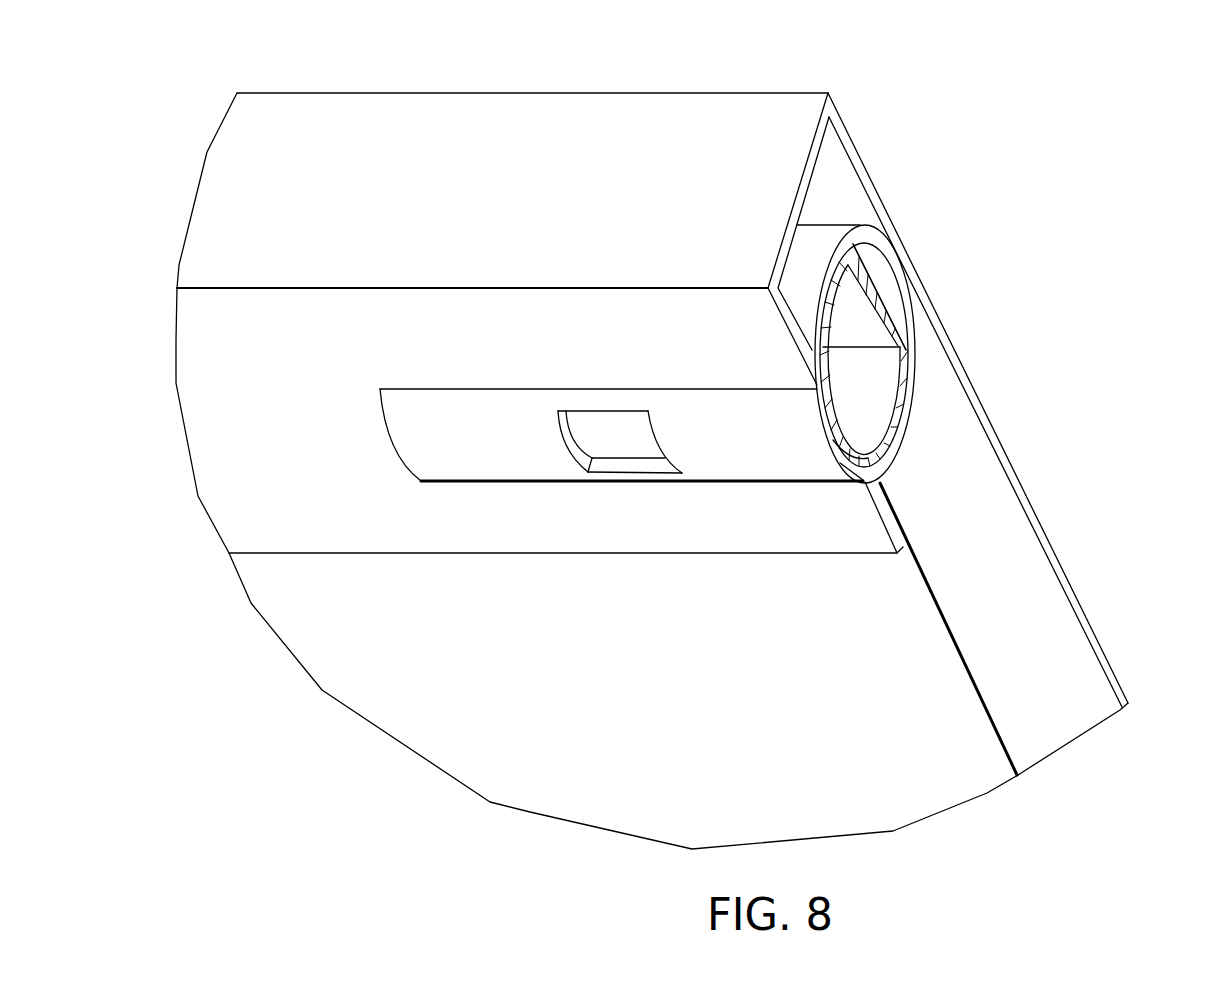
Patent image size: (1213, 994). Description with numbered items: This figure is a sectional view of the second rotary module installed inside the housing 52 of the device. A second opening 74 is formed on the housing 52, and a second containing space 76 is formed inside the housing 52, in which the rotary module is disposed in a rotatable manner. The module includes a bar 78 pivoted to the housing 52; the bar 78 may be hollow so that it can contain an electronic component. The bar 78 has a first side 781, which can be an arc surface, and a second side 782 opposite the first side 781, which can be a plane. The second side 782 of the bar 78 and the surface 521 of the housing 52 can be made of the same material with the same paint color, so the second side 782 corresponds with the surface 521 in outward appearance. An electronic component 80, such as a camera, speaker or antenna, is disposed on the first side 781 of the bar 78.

The housing 52 is at (722, 103).
The surface of the housing 521 is at (875, 524).
The second opening 74 is at (863, 481).
The second containing space 76 is at (883, 272).
The bar 78 is at (990, 345).
The first side 781 is at (800, 435).
The second side 782 is at (887, 298).
The electronic component 80 is at (612, 427).